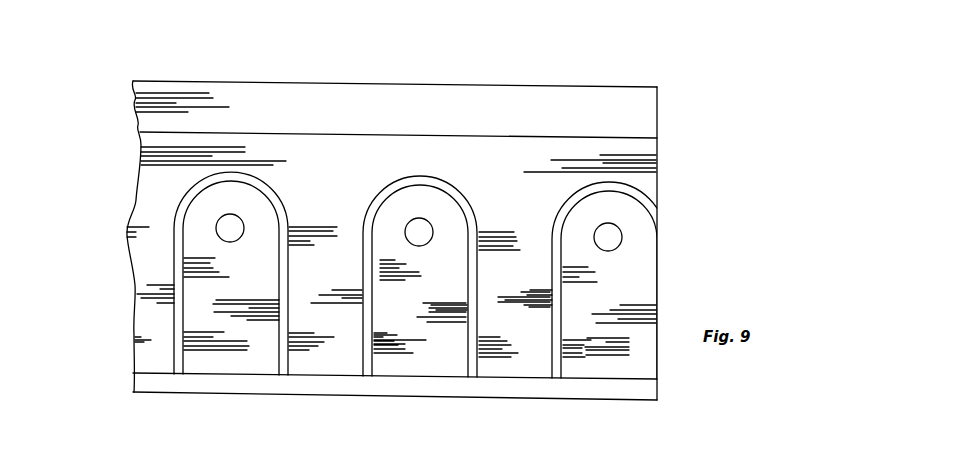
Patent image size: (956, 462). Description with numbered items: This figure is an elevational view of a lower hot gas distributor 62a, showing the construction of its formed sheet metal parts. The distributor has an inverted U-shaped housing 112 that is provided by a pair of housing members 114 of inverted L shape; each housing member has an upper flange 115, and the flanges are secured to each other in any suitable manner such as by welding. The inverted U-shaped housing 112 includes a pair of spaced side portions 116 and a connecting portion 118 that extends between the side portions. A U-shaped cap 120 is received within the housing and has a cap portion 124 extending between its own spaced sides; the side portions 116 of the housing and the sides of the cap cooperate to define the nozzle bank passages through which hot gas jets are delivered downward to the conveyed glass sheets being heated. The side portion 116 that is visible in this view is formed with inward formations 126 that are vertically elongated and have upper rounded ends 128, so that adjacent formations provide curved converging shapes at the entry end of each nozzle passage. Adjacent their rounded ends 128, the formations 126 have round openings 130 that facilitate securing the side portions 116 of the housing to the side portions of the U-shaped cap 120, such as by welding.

The hot gas distributor 62a is at (680, 192).
The inverted U-shaped housing 112 is at (503, 136).
The housing member 114 is at (140, 132).
The upper flange 115 is at (302, 118).
The side portion of housing 116 is at (528, 257).
The connecting portion 118 is at (463, 138).
The U-shaped cap 120 is at (584, 400).
The cap portion 124 is at (498, 388).
The inward formation 126 is at (176, 311).
The upper rounded end 128 is at (233, 172).
The round opening 130 is at (221, 218).